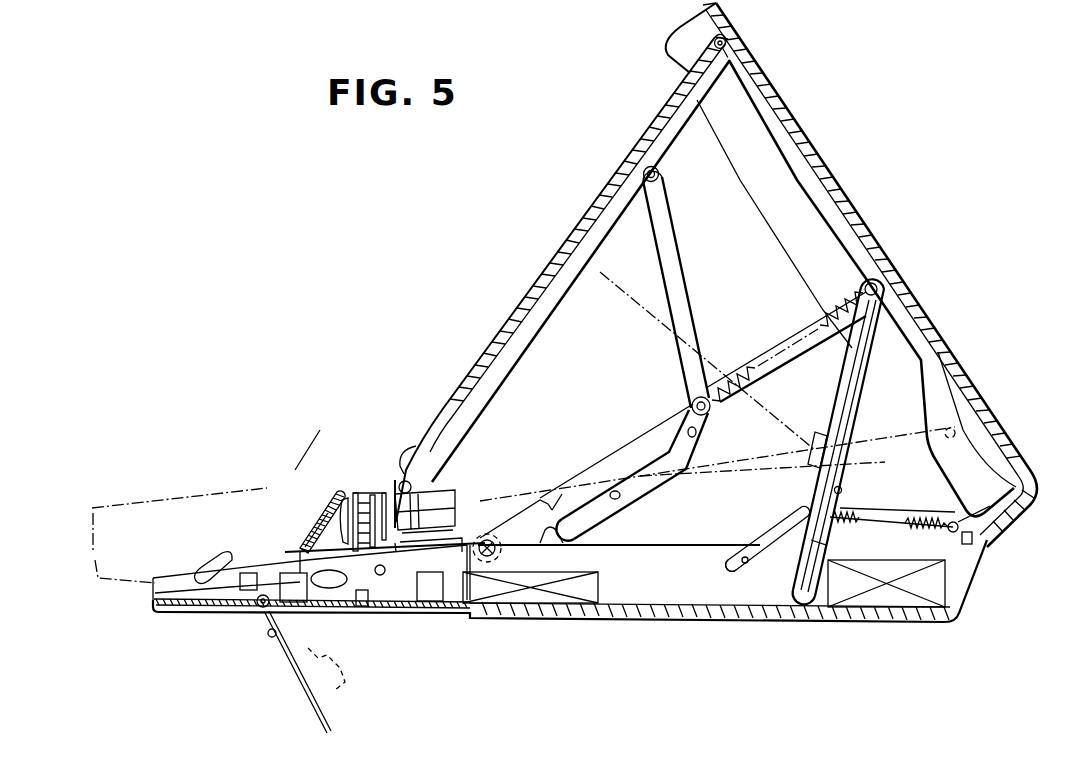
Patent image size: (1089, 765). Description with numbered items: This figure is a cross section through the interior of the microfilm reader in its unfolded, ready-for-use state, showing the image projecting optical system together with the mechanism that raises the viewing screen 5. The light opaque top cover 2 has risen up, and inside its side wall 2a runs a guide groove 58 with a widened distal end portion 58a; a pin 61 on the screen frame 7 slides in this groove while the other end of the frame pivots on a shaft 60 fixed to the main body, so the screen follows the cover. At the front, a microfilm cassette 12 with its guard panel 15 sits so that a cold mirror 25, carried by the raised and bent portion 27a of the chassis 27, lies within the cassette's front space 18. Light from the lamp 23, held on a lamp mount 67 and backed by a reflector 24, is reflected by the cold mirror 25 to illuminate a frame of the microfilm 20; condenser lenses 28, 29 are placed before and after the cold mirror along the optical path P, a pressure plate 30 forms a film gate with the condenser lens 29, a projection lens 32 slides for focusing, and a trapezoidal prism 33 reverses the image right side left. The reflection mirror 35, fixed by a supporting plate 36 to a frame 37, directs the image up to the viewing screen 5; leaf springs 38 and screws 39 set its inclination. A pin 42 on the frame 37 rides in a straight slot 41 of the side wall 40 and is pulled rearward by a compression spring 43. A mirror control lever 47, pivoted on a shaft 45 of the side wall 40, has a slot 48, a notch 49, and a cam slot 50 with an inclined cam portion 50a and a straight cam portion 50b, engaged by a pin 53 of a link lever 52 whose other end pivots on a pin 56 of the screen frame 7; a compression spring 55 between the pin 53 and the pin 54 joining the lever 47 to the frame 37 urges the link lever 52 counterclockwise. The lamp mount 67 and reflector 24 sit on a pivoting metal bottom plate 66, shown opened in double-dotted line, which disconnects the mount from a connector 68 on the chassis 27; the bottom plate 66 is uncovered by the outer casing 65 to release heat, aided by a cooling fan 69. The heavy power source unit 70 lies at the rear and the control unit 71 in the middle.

The top cover 2 is at (832, 165).
The side wall of the top cover 2a is at (666, 44).
The viewing screen 5 is at (656, 112).
The screen frame 7 is at (586, 210).
The microfilm cassette 12 is at (178, 482).
The guard panel 15 is at (320, 430).
The space 18 is at (296, 520).
The microfilm 20 is at (350, 517).
The lamp 23 is at (358, 584).
The reflector 24 is at (342, 613).
The cold mirror 25 is at (326, 516).
The chassis 27 is at (256, 568).
The raised and bent portion 27a is at (302, 510).
The condenser lens 28 is at (420, 560).
The condenser lens 29 is at (298, 560).
The pressure plate 30 is at (368, 495).
The projection lens 32 is at (446, 495).
The trapezoidal prism 33 is at (462, 508).
The reflection mirror 35 is at (846, 382).
The supporting plate 36 is at (872, 370).
The frame 37 is at (866, 382).
The leaf spring 38 is at (836, 488).
The screw 39 is at (822, 548).
The side wall 40 is at (687, 598).
The straight slot 41 is at (745, 560).
The pin 42 is at (796, 512).
The compression spring 43 is at (850, 512).
The shaft 45 is at (505, 557).
The mirror control lever 47 is at (625, 448).
The slot 48 is at (520, 535).
The notch 49 is at (560, 490).
The cam slot 50 is at (660, 490).
The inclined cam portion 50a is at (705, 435).
The straight cam portion 50b is at (622, 502).
The link lever 52 is at (680, 260).
The pin 53 is at (693, 400).
The pin 54 is at (863, 283).
The compression spring 55 is at (738, 368).
The pin 56 is at (660, 177).
The guide groove 58 is at (772, 108).
The widened distal end portion 58a is at (985, 455).
The shaft 60 is at (400, 468).
The pin 61 is at (731, 42).
The outer casing 65 is at (575, 618).
The bottom plate 66 is at (262, 700).
The lamp mount 67 is at (290, 640).
The connector 68 is at (226, 605).
The cooling fan 69 is at (432, 610).
The power source unit 70 is at (880, 604).
The control unit 71 is at (523, 600).
The optical path P is at (530, 492).